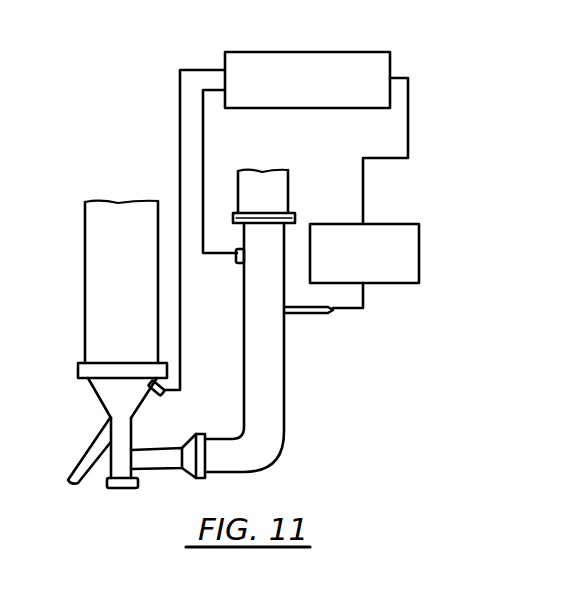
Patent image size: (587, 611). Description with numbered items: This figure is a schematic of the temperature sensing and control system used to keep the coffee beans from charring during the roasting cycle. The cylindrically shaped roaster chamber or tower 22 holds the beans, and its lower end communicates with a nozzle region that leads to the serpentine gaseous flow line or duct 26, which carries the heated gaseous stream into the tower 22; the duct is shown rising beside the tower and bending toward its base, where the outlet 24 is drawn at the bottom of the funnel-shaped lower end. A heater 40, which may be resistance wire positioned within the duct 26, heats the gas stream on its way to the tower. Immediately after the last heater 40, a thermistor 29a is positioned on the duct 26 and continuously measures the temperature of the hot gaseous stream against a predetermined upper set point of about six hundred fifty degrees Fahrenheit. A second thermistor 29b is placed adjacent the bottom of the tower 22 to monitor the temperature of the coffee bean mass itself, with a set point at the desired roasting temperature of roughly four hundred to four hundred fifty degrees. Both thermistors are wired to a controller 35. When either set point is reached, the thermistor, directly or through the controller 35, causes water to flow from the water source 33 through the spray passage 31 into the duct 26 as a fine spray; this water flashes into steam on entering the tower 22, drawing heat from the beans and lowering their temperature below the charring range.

The coffee bean roaster chamber or tower 22 is at (74, 289).
The discharge outlet tube 24 is at (98, 478).
The serpentine gaseous flow line or duct 26 is at (285, 397).
The thermistor 29a is at (238, 264).
The second thermistor 29b is at (158, 396).
The spray passage 31 is at (310, 314).
The water source 33 is at (380, 284).
The controller 35 is at (318, 11).
The heater 40 is at (300, 190).